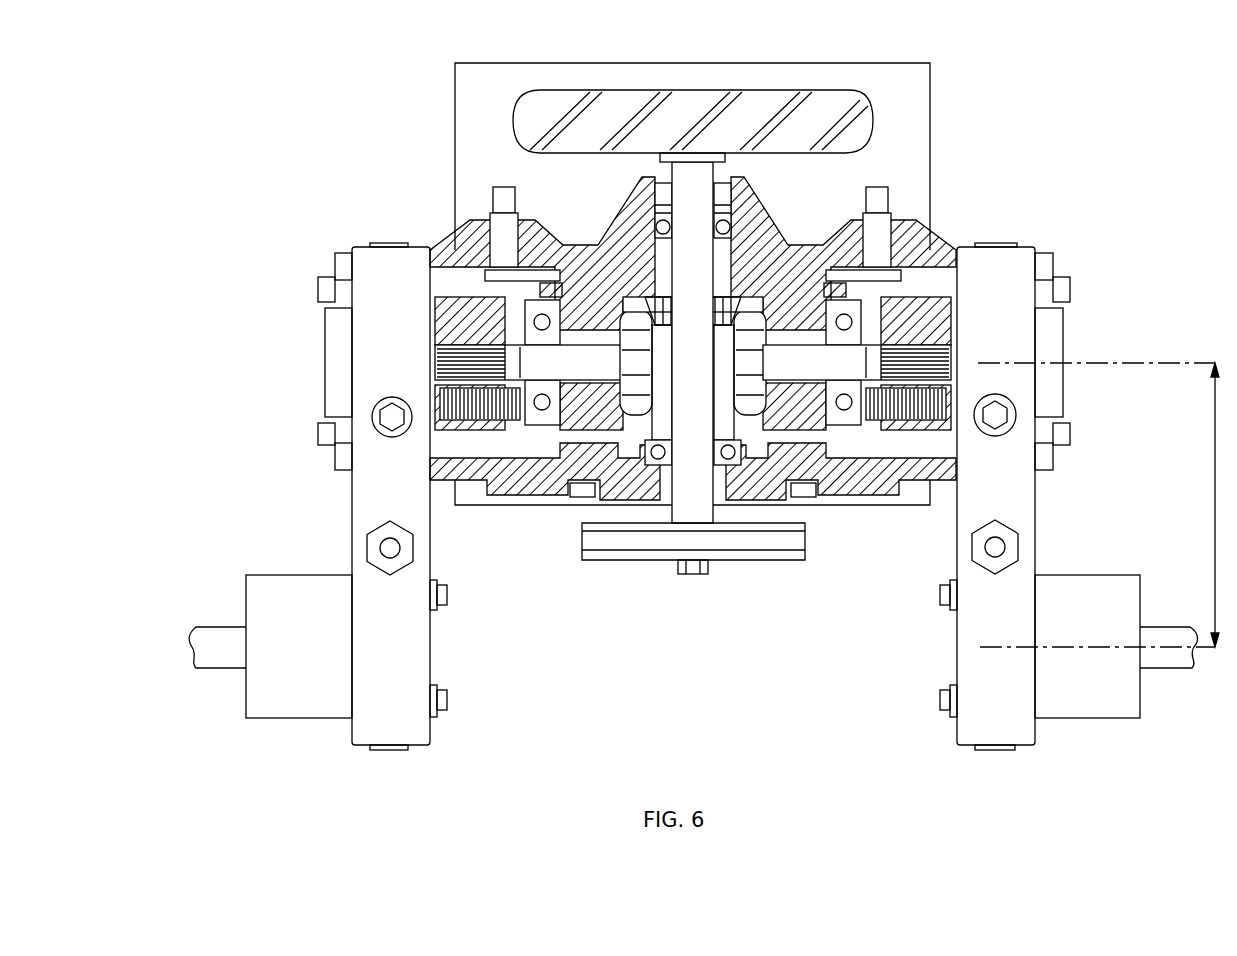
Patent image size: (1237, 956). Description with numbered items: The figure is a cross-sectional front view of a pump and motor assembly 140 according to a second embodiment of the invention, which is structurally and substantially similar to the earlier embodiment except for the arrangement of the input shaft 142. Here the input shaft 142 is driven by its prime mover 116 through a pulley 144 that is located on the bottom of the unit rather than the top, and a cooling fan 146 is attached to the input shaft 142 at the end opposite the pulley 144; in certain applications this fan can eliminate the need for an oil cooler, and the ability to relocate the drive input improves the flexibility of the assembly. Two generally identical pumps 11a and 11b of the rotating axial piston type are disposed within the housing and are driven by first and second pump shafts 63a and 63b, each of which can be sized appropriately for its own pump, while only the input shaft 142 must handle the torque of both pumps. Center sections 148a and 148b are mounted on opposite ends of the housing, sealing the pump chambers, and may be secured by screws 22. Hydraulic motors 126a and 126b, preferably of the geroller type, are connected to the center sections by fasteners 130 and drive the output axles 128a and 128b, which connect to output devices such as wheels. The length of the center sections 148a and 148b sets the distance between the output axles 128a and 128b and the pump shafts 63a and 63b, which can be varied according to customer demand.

The pump and motor assembly 140 is at (312, 126).
The prime mover 116 is at (455, 100).
The cooling fan 146 is at (873, 104).
The input shaft 142 is at (716, 167).
The first pump 11a is at (529, 338).
The second pump 11b is at (859, 338).
The first pump shaft 63a is at (577, 374).
The second pump shaft 63b is at (850, 374).
The first center section 148a is at (417, 505).
The second center section 148b is at (984, 496).
The screws 22 is at (1047, 460).
The pulley 144 is at (755, 562).
The first hydraulic motor 126a is at (323, 686).
The second hydraulic motor 126b is at (1112, 686).
The first output axle 128a is at (219, 671).
The second output axle 128b is at (1168, 671).
The fasteners 130 is at (938, 705).